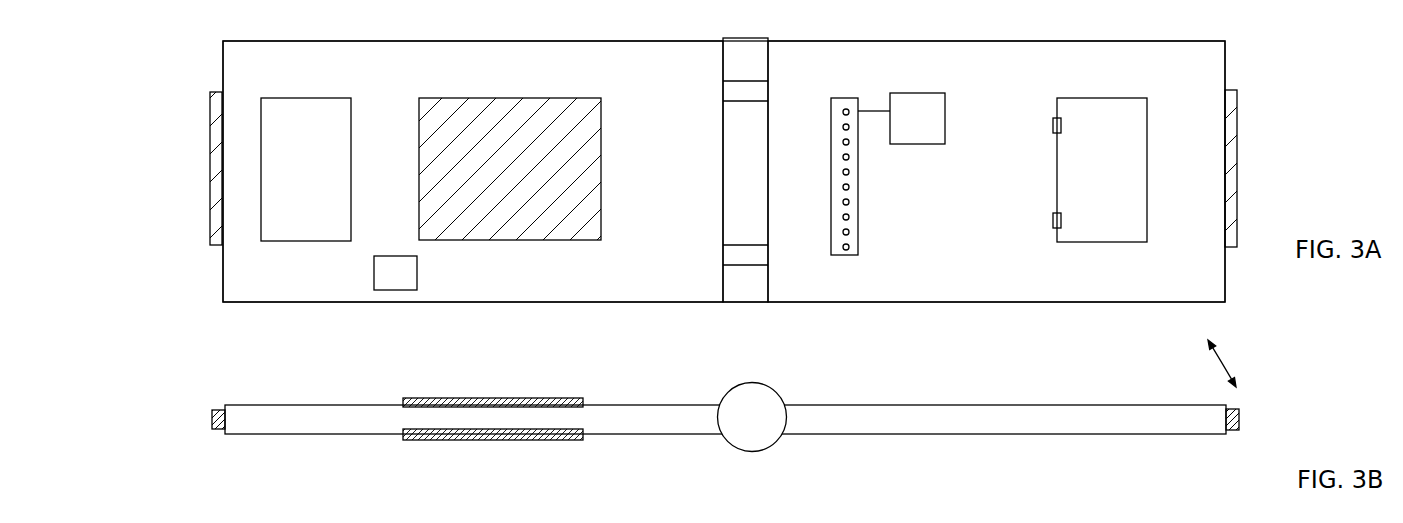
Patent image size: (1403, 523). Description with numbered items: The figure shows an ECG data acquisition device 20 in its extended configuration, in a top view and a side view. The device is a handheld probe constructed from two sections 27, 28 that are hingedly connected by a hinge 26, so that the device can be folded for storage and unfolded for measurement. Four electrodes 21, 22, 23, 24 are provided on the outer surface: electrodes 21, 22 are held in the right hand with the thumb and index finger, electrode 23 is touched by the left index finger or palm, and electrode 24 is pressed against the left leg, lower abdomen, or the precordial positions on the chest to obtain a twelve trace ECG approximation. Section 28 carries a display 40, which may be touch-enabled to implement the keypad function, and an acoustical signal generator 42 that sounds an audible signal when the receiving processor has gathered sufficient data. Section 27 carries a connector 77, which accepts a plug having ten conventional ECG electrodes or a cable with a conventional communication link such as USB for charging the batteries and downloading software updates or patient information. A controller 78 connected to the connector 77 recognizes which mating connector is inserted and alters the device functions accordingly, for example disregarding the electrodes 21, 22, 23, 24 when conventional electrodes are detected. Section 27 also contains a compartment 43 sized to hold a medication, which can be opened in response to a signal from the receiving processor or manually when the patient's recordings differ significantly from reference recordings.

In FIG. 3A, the ECG data acquisition device 20 is at (109, 76).
In FIG. 3B, the ECG data acquisition device 20 is at (108, 391).
In FIG. 3A, the electrode 21 is at (511, 195).
In FIG. 3B, the electrode 21 is at (515, 403).
In FIG. 3B, the electrode 22 is at (510, 440).
In FIG. 3A, the electrode 23 is at (210, 187).
In FIG. 3B, the electrode 23 is at (213, 422).
In FIG. 3A, the electrode 24 is at (1230, 168).
In FIG. 3B, the electrode 24 is at (1240, 421).
In FIG. 3B, the hinge 26 is at (747, 437).
In FIG. 3A, the section 27 is at (989, 187).
In FIG. 3A, the section 28 is at (676, 187).
In FIG. 3A, the display 40 is at (314, 228).
In FIG. 3A, the acoustical signal generator 42 is at (379, 292).
In FIG. 3A, the compartment 43 is at (1107, 222).
In FIG. 3A, the connector 77 is at (858, 195).
In FIG. 3A, the controller 78 is at (945, 110).